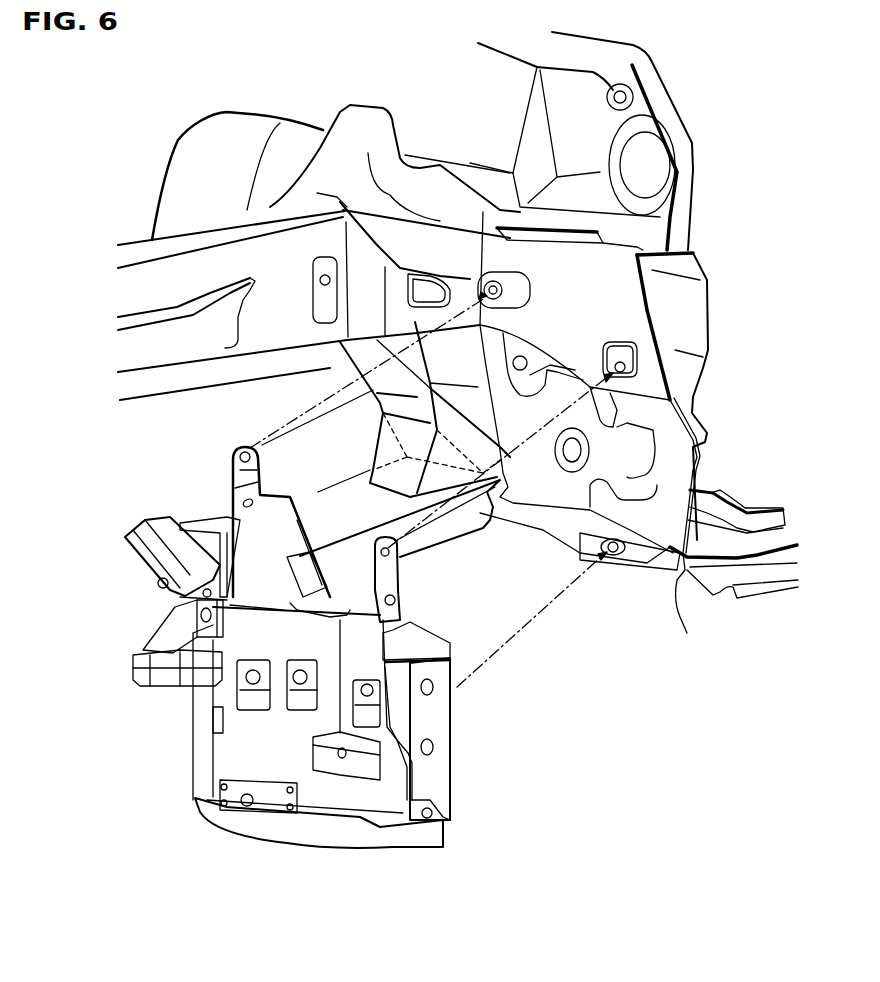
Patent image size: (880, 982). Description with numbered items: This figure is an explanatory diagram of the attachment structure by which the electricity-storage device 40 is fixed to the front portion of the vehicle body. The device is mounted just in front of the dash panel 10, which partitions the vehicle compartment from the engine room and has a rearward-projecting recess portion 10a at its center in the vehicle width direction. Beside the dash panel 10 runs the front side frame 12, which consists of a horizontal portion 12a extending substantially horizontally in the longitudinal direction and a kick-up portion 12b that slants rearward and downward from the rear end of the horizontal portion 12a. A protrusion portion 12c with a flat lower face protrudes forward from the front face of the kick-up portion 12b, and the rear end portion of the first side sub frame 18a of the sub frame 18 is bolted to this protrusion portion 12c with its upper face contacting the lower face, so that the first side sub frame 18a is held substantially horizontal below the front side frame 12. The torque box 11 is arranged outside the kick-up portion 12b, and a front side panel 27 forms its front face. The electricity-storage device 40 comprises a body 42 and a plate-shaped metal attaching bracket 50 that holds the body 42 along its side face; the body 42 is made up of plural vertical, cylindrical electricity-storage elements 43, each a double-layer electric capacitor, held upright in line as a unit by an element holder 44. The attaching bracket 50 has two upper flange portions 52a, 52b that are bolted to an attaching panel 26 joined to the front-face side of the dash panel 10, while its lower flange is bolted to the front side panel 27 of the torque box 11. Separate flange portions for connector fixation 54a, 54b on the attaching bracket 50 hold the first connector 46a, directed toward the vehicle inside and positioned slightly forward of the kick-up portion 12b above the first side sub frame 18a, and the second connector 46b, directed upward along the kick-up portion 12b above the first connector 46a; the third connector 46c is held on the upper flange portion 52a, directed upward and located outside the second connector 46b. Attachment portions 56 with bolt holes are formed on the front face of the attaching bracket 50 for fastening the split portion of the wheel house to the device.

The dash panel 10 is at (700, 179).
The recess portion 10a is at (210, 148).
The torque box 11 is at (727, 500).
The front side frame 12 is at (140, 243).
The horizontal portion 12a is at (208, 372).
The kick-up portion 12b is at (355, 364).
The protrusion portion 12c is at (380, 453).
The sub frame 18 is at (437, 543).
The first side sub frame 18a is at (490, 536).
The attaching panel 26 is at (632, 320).
The front side panel 27 is at (687, 633).
The electricity-storage device 40 is at (380, 824).
The body 42 is at (433, 847).
The electricity-storage element 43 is at (449, 764).
The element holder 44 is at (445, 720).
The first connector 46a is at (145, 672).
The second connector 46b is at (147, 562).
The third connector 46c is at (403, 537).
The attaching bracket 50 is at (243, 757).
The upper flange portion 52a is at (243, 523).
The upper flange portion 52b is at (393, 573).
The flange portion for connector fixation 54a is at (145, 648).
The flange portion for connector fixation 54b is at (173, 518).
The attachment portion 56 is at (333, 753).